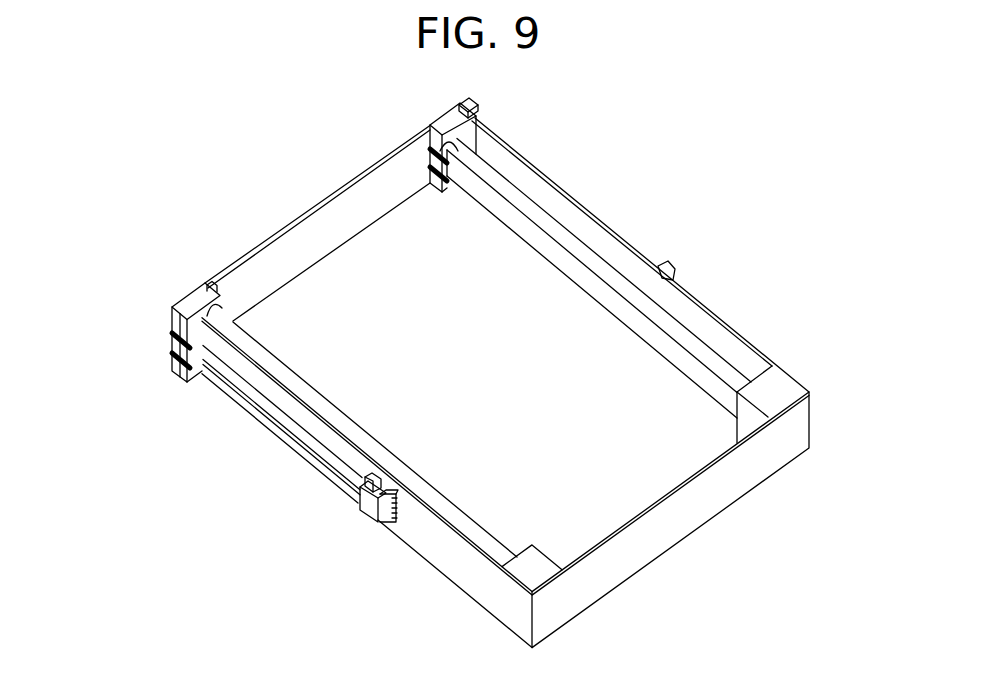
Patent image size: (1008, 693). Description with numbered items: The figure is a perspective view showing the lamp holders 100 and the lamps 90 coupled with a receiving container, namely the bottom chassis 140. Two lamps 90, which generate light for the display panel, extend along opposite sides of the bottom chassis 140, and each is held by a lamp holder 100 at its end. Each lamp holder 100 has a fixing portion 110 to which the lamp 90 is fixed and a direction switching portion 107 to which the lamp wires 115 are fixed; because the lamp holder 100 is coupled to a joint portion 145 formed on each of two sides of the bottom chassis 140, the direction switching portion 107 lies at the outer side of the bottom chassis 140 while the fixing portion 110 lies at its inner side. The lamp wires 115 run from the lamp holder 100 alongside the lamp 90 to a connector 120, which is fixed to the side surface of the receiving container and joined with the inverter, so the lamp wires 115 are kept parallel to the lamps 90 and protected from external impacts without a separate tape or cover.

The lamp 90 is at (597, 224).
The lamp holder 100 is at (596, 88).
The direction switching portion 107 is at (474, 105).
The fixing portion 110 is at (480, 122).
The lamp wire 115 is at (276, 425).
The connector 120 is at (360, 503).
The bottom chassis 140 is at (668, 541).
The joint portion 145 is at (172, 352).